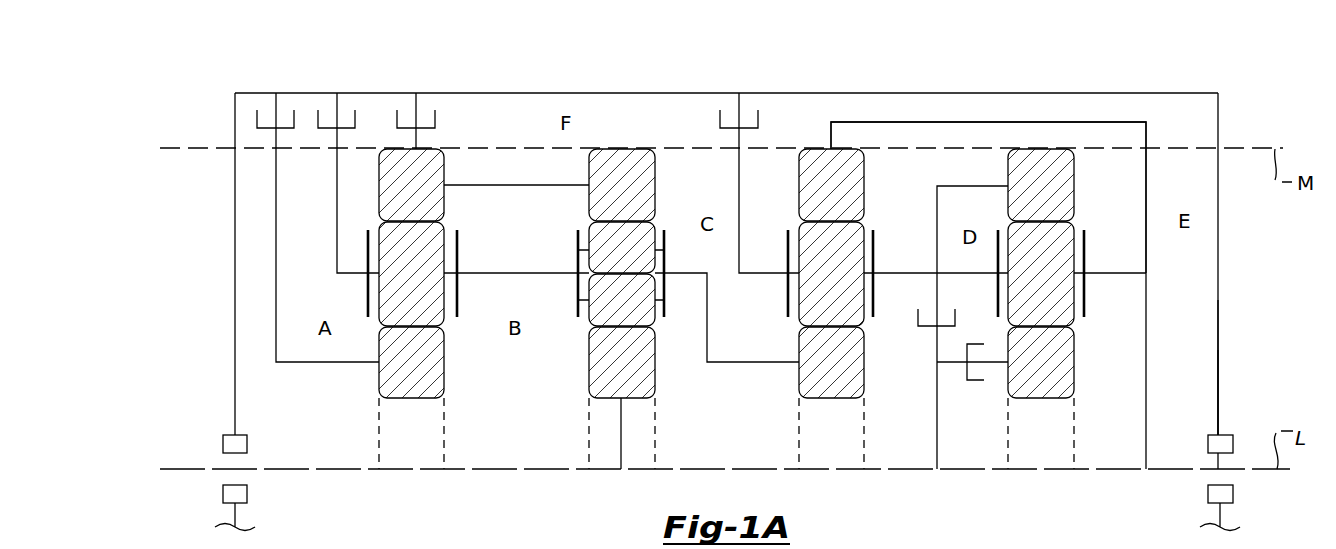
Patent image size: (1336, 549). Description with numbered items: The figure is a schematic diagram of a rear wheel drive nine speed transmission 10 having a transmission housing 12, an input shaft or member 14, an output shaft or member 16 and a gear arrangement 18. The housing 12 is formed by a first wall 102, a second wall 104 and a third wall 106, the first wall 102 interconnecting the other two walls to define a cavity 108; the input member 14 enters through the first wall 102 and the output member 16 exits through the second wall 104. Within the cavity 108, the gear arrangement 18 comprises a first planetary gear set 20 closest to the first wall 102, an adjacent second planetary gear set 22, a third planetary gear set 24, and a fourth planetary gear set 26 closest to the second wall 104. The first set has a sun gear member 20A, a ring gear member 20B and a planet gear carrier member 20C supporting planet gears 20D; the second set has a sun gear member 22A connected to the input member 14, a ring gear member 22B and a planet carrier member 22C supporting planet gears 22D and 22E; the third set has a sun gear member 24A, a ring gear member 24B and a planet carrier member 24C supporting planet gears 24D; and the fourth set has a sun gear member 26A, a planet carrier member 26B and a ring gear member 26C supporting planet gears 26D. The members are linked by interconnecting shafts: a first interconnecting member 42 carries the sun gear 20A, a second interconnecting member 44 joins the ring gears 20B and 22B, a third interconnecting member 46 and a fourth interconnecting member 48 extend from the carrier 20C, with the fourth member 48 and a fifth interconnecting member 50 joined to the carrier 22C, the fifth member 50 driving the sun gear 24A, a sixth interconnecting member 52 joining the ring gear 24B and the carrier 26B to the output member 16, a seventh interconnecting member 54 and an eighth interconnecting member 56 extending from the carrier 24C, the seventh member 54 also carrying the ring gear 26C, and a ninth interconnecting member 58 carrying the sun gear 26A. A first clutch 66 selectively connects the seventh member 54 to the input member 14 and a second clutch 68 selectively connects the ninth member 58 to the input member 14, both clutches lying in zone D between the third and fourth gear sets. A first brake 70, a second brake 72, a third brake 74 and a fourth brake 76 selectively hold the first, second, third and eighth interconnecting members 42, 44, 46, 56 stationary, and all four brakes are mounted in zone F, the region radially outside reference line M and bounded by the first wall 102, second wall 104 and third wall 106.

The transmission 10 is at (1205, 70).
The transmission housing 12 is at (1218, 247).
The input shaft or member 14 is at (212, 469).
The output shaft or member 16 is at (1178, 469).
The gear arrangement 18 is at (1183, 124).
The first planetary gear set 20 is at (441, 349).
The sun gear member 20A is at (403, 377).
The ring gear member 20B is at (403, 199).
The planet gear carrier member 20C is at (457, 240).
The planet gears 20D is at (403, 287).
The second planetary gear set 22 is at (636, 349).
The sun gear member 22A is at (614, 377).
The ring gear member 22B is at (614, 199).
The planet carrier member 22C is at (664, 240).
The planet gears 22D is at (614, 259).
The planet gears 22E is at (614, 311).
The third planetary gear set 24 is at (848, 349).
The sun gear member 24A is at (823, 377).
The ring gear member 24B is at (823, 199).
The planet carrier member 24C is at (874, 242).
The planet gears 24D is at (823, 287).
The fourth planetary gear set 26 is at (1058, 349).
The sun gear member 26A is at (1033, 377).
The planet carrier member 26B is at (1084, 242).
The ring gear member 26C is at (1033, 199).
The planet gears 26D is at (1033, 287).
The first shaft or interconnecting member 42 is at (276, 237).
The second shaft or interconnecting member 44 is at (416, 140).
The third shaft or interconnecting member 46 is at (337, 203).
The fourth shaft or interconnecting member 48 is at (546, 265).
The fifth shaft or interconnecting member 50 is at (707, 348).
The sixth shaft or interconnecting member 52 is at (960, 122).
The seventh shaft or interconnecting member 54 is at (968, 186).
The eighth shaft or interconnecting member 56 is at (739, 205).
The ninth shaft or interconnecting member 58 is at (995, 365).
The first clutch 66 is at (955, 316).
The second clutch 68 is at (967, 372).
The first brake 70 is at (257, 119).
The second brake 72 is at (435, 119).
The third brake 74 is at (355, 119).
The fourth brake 76 is at (758, 119).
The first wall or structural member 102 is at (235, 258).
The second wall or structural member 104 is at (1218, 340).
The third wall or structural member 106 is at (609, 93).
The space or cavity 108 is at (1198, 388).